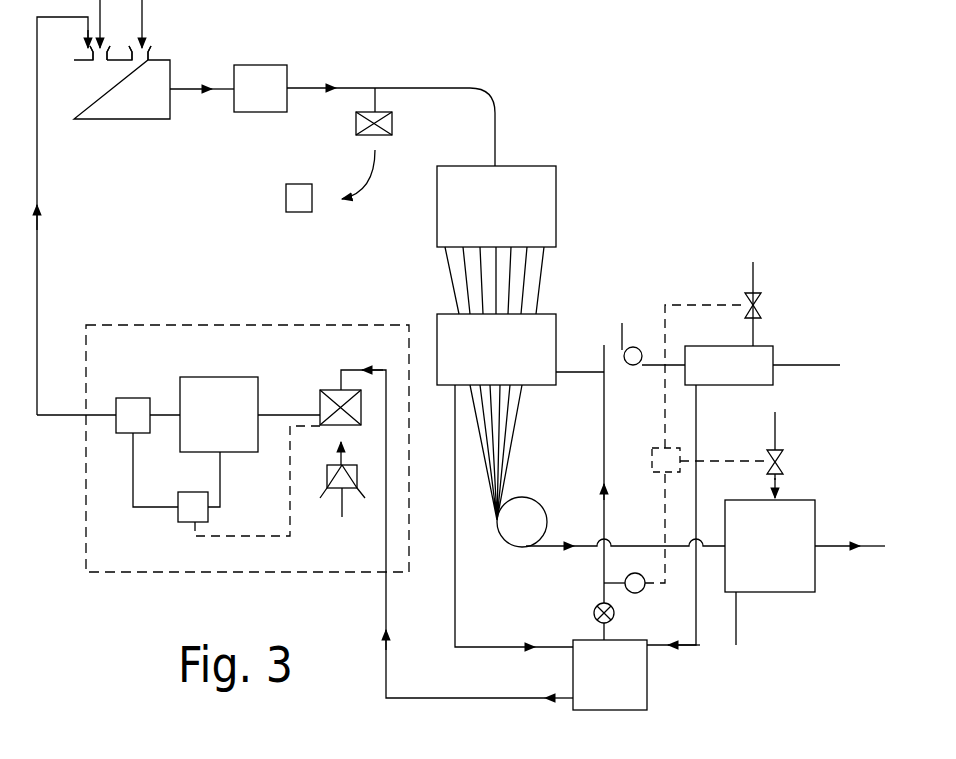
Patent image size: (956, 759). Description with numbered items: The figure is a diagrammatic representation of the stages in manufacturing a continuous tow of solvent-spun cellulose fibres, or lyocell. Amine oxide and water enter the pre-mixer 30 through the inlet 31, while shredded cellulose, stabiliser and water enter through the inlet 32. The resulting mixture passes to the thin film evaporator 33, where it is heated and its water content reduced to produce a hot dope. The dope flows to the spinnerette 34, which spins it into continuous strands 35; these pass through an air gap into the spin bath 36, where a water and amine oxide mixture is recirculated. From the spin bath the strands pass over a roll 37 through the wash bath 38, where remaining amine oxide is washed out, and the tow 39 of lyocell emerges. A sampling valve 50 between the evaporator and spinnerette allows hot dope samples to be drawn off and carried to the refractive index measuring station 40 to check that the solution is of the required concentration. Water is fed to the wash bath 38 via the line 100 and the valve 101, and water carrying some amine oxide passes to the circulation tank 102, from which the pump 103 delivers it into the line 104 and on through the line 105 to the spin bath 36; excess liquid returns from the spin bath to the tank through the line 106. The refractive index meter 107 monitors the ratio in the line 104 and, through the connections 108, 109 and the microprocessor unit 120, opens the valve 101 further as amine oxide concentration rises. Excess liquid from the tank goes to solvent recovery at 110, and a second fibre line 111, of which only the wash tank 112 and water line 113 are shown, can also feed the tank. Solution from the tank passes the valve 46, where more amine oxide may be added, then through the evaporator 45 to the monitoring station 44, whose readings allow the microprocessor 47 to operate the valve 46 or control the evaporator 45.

The pre-mixer 30 is at (132, 120).
The inlet 31 is at (90, 51).
The inlet 32 is at (150, 53).
The thin film evaporator 33 is at (275, 103).
The spinnerette 34 is at (481, 223).
The continuous strands 35 is at (548, 275).
The spin bath 36 is at (481, 365).
The roller 37 is at (514, 525).
The wash bath 38 is at (754, 561).
The tow 39 is at (834, 548).
The refractive index measuring station 40 is at (285, 202).
The monitoring station 44 is at (128, 405).
The evaporator 45 is at (203, 429).
The valve 46 is at (318, 406).
The microprocessor 47 is at (193, 510).
The valve 50 is at (395, 123).
The line 100 is at (785, 476).
The valve 101 is at (793, 460).
The circulation tank 102 is at (590, 690).
The pump 103 is at (593, 613).
The line 104 is at (600, 569).
The line 105 is at (578, 376).
The line 106 is at (500, 648).
The refractive index meter 107 is at (640, 592).
The connection 108 is at (665, 500).
The connection 109 is at (732, 461).
The solvent recovery 110 is at (258, 320).
The line 111 is at (820, 360).
The wash tank 112 is at (709, 379).
The water line 113 is at (757, 331).
The microprocessor unit 120 is at (660, 450).